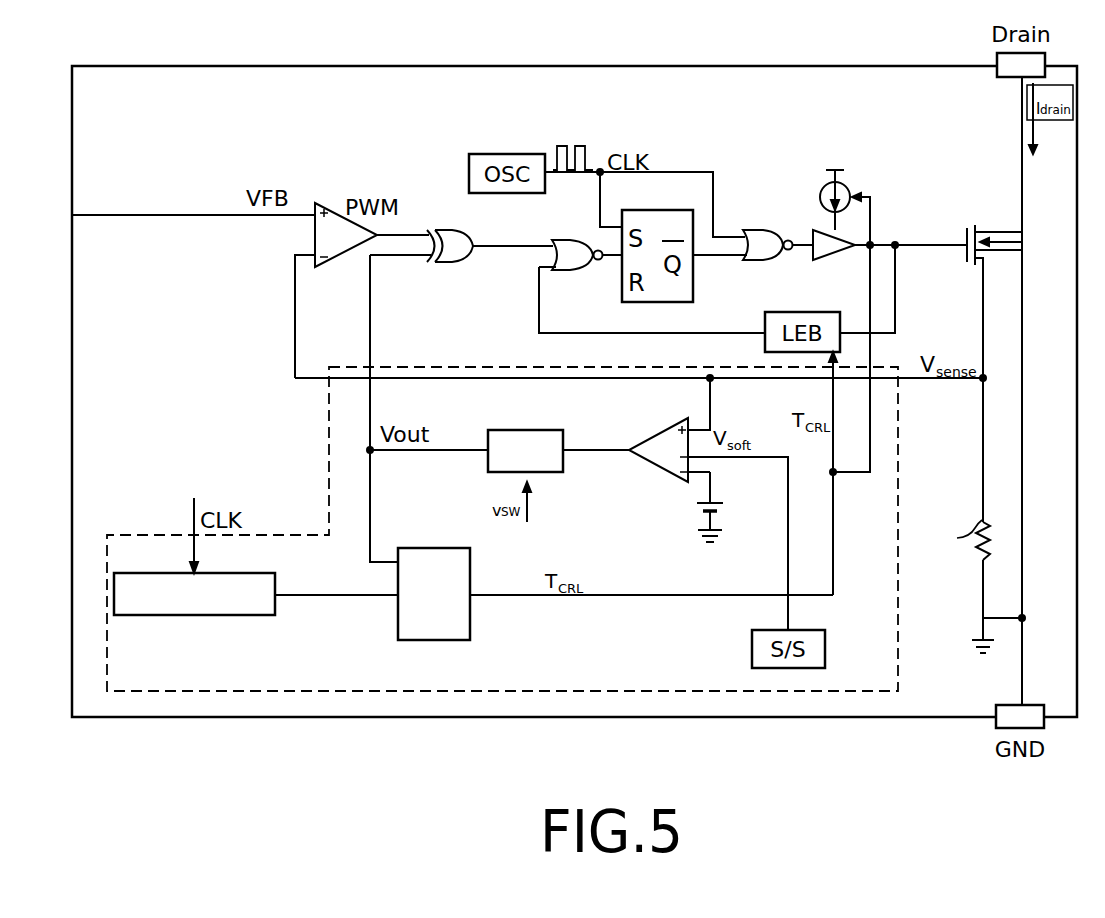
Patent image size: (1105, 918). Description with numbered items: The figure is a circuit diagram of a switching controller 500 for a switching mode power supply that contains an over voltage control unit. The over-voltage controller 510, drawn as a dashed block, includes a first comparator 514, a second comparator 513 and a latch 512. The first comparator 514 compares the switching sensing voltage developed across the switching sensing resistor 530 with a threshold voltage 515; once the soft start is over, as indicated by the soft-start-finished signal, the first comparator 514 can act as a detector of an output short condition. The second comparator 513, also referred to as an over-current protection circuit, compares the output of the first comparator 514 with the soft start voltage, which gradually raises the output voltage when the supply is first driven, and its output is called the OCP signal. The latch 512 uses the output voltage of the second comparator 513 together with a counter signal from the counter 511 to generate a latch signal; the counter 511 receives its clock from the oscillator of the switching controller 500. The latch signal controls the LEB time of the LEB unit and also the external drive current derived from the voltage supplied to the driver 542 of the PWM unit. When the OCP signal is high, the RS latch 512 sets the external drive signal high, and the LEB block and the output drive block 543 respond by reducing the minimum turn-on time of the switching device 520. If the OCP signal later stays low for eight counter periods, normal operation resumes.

The switching controller 500 is at (597, 66).
The over-voltage controller 510 is at (497, 692).
The counter 511 is at (256, 573).
The latch 512 is at (427, 640).
The second comparator 513 is at (513, 430).
The first comparator 514 is at (657, 470).
The threshold voltage 515 is at (717, 506).
The switching device 520 is at (1011, 232).
The switching sensing resistor 530 is at (983, 512).
The driver 542 is at (833, 261).
The output drive block 543 is at (851, 185).